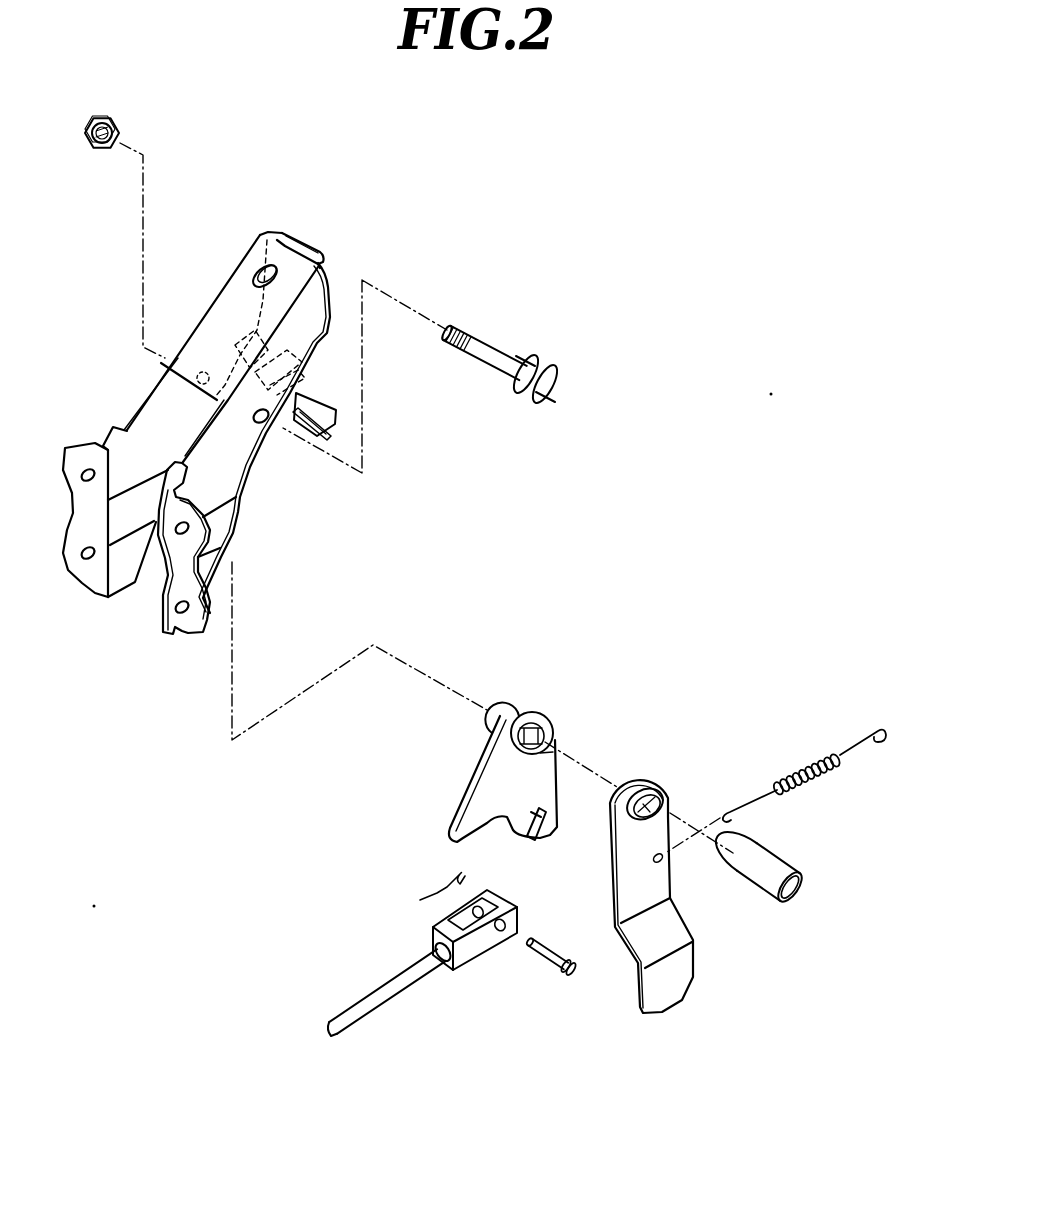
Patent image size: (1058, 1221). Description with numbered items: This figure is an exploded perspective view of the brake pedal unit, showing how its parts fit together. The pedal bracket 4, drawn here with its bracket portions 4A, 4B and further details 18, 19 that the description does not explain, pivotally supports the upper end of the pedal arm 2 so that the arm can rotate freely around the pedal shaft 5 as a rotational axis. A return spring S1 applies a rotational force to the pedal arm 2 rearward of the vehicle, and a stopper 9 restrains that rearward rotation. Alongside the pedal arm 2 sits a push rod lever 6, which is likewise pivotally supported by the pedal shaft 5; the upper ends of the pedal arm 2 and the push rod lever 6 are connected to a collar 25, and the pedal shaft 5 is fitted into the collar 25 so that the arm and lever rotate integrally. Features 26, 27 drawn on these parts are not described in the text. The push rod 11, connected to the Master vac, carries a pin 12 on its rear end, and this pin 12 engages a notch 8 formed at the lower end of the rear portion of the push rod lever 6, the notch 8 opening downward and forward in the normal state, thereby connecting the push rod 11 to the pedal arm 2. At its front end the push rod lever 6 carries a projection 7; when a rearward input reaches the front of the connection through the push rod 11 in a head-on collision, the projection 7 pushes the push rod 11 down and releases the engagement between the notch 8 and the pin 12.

The pedal arm 2 is at (687, 960).
The pedal bracket 4 is at (325, 275).
The first flange of bracket 4A is at (187, 634).
The second flange of bracket 4B is at (223, 302).
The pedal shaft 5 is at (500, 363).
The push rod lever 6 is at (527, 777).
The projection 7 is at (460, 832).
The notch 8 is at (538, 828).
The stopper 9 is at (320, 398).
The push rod 11 is at (407, 983).
The pin 12 is at (550, 963).
The slot 18 is at (262, 282).
The flange 19 is at (293, 252).
The collar 25 is at (787, 863).
The boss 26 is at (540, 712).
The hole 27 is at (663, 780).
The return spring S1 is at (805, 767).